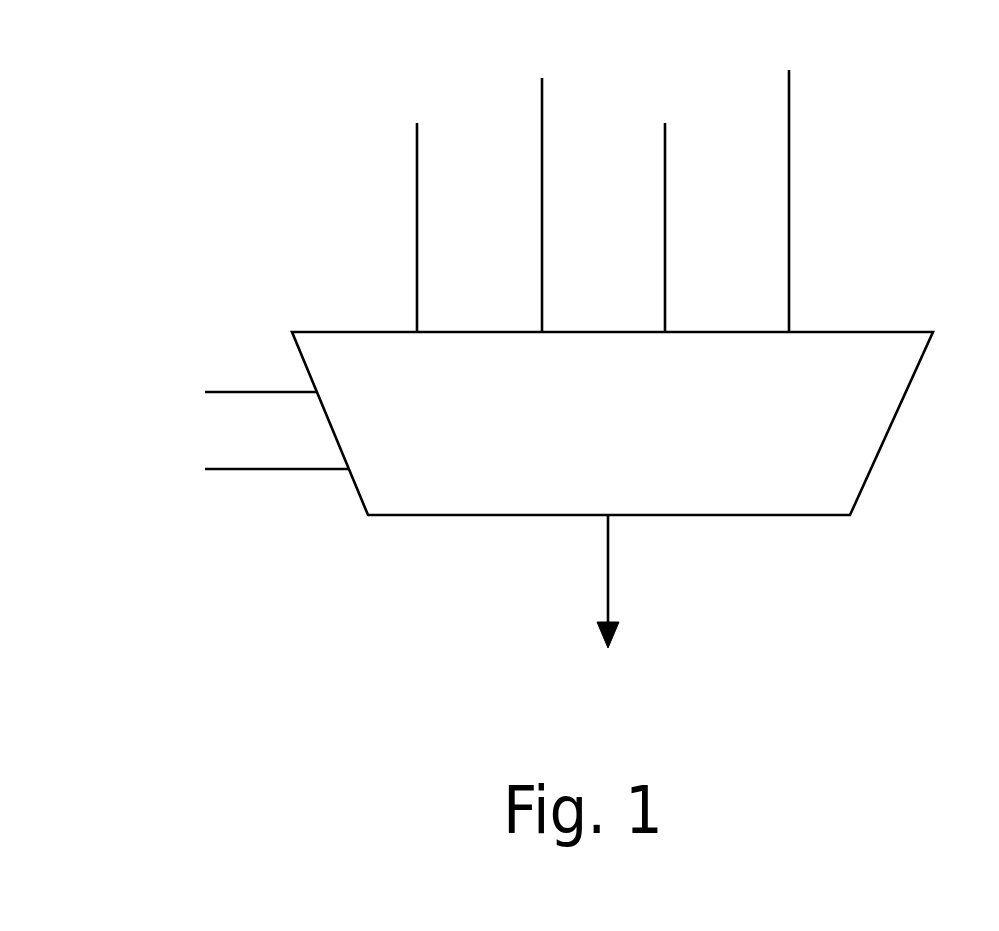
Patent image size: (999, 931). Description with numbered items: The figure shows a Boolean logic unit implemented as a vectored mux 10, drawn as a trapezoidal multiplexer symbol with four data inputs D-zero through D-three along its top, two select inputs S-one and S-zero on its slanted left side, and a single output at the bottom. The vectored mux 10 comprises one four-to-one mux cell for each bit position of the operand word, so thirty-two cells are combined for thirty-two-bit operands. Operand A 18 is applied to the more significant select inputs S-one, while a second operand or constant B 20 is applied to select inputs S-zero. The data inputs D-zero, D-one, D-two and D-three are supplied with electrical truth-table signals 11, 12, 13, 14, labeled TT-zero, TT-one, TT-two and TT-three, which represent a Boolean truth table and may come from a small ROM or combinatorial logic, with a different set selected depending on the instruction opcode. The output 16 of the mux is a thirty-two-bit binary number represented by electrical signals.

The vectored mux 10 is at (892, 430).
The truth-table signal 11 is at (789, 255).
The truth-table signal 12 is at (665, 178).
The truth-table signal 13 is at (542, 263).
The truth-table signal 14 is at (417, 197).
The output 16 is at (608, 570).
The operand A 18 is at (277, 392).
The operand B 20 is at (237, 469).